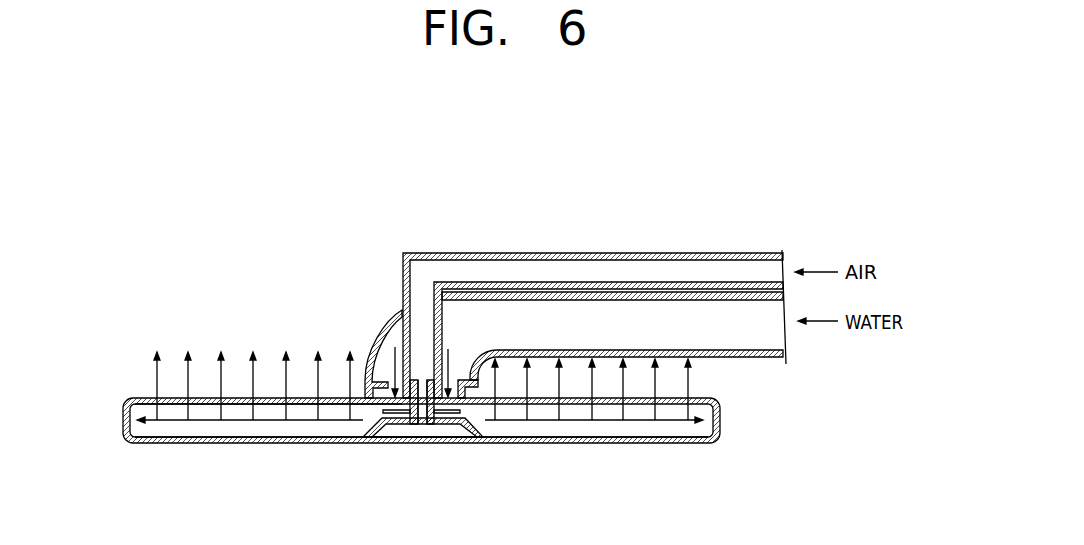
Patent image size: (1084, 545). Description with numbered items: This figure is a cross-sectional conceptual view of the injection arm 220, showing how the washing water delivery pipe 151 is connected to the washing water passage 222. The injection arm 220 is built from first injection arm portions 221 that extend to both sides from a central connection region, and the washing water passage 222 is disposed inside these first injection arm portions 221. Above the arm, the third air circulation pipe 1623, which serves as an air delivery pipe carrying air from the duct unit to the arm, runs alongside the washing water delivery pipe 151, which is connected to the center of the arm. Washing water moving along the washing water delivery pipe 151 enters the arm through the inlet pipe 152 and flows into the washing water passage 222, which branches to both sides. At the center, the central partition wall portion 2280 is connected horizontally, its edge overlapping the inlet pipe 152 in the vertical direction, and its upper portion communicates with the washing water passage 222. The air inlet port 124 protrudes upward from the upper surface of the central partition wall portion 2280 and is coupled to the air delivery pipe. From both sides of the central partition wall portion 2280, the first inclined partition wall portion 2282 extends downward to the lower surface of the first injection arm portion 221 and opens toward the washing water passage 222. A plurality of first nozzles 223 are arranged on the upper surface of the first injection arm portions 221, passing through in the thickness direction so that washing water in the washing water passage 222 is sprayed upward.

The injection arm 220 is at (277, 445).
The first injection arm portion 221 is at (195, 443).
The washing water passage 222 is at (433, 355).
The first nozzle 223 is at (155, 398).
The inlet pipe 152 is at (393, 371).
The third air circulation pipe 1623 is at (560, 253).
The washing water delivery pipe 151 is at (652, 292).
The central partition wall portion 2280 is at (398, 423).
The first inclined partition wall portion 2282 is at (367, 428).
The air inlet port 124 is at (418, 402).